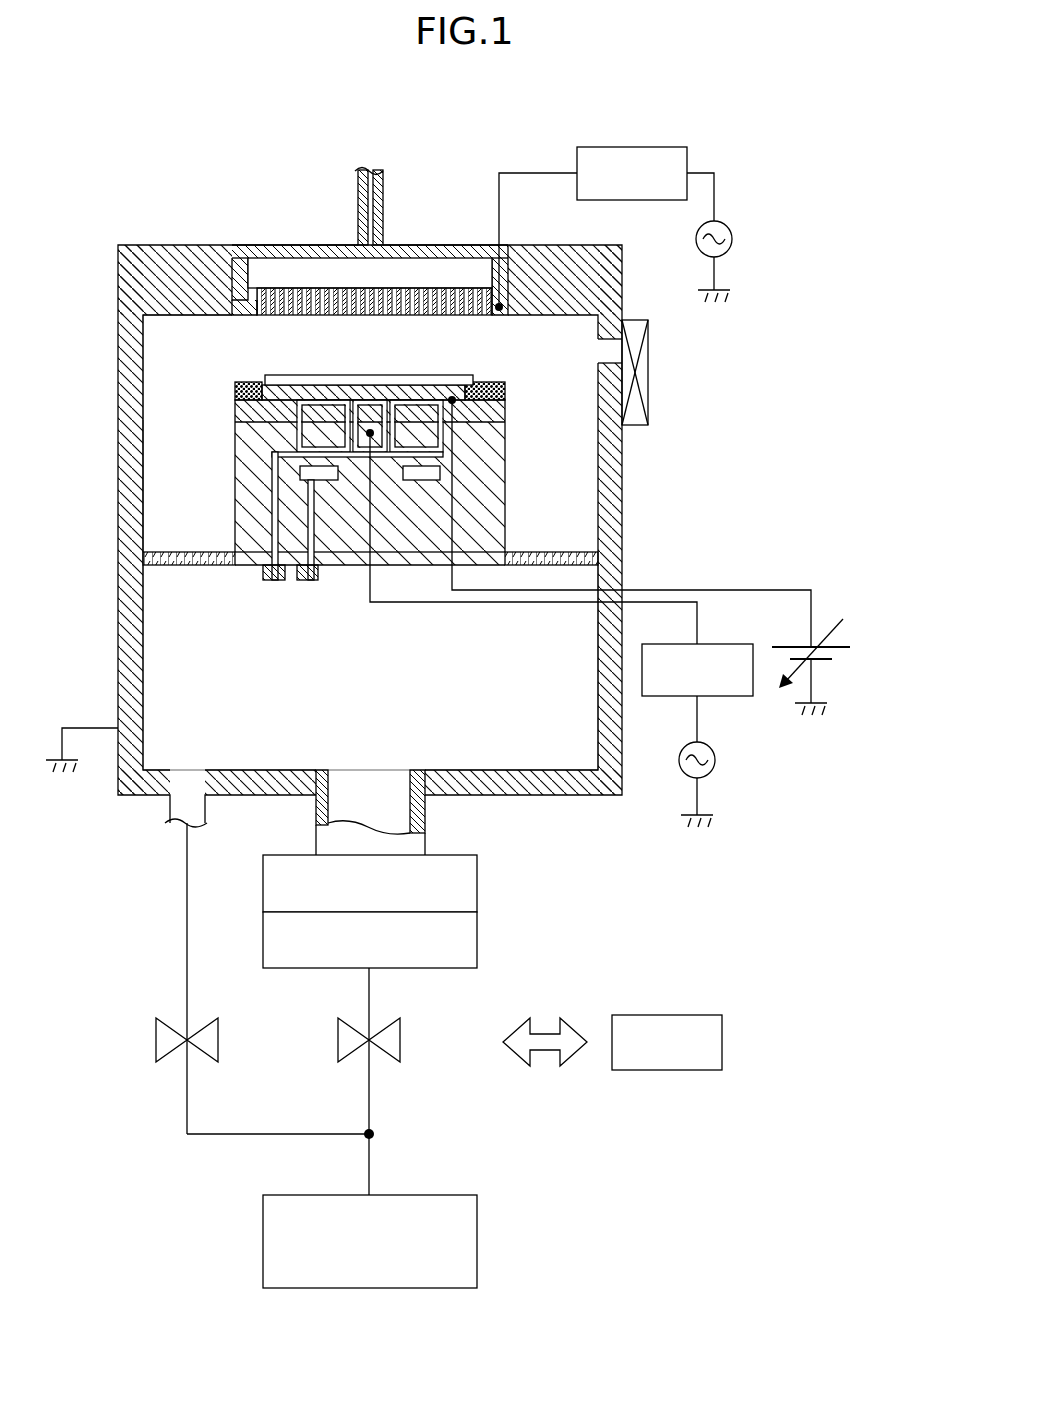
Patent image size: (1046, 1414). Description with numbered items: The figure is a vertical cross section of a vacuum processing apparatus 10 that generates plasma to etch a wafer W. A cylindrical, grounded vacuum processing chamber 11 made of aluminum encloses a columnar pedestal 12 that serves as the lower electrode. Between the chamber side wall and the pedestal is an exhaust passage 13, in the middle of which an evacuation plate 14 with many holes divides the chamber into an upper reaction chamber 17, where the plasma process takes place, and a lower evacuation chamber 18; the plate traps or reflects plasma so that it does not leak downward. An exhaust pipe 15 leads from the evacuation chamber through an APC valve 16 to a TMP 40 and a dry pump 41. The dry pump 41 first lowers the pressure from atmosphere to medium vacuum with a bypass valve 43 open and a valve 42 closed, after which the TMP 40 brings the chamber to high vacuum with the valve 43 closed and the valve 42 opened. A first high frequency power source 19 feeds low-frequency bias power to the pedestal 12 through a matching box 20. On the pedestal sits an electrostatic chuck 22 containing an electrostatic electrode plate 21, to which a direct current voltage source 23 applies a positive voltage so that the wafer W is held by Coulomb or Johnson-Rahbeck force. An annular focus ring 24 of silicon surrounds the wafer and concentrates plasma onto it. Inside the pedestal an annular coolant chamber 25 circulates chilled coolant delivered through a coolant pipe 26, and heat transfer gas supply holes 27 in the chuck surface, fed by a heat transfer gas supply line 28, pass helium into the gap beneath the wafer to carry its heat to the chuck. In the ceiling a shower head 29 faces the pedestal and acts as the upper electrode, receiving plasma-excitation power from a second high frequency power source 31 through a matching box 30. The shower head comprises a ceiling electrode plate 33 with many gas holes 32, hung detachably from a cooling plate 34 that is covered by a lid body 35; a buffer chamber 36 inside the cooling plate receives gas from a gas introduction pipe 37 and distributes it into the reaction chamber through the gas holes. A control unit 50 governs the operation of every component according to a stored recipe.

The vacuum processing apparatus 10 is at (341, 104).
The vacuum processing chamber 11 is at (118, 283).
The pedestal 12 is at (381, 490).
The exhaust passage 13 is at (152, 499).
The evacuation plate 14 is at (155, 552).
The exhaust pipe 15 is at (427, 815).
The APC valve 16 is at (477, 883).
The reaction chamber 17 is at (152, 370).
The evacuation chamber 18 is at (152, 630).
The first high frequency power source 19 is at (715, 760).
The matching box 20 is at (680, 697).
The electrostatic electrode plate 21 is at (430, 385).
The electrostatic chuck 22 is at (335, 392).
The direct current voltage source 23 is at (840, 645).
The focus ring 24 is at (490, 383).
The coolant chamber 25 is at (418, 480).
The coolant pipe 26 is at (318, 581).
The heat transfer gas supply holes 27 is at (382, 406).
The heat transfer gas supply line 28 is at (260, 587).
The shower head 29 is at (367, 254).
The matching box 30 is at (631, 147).
The second high frequency power source 31 is at (732, 240).
The gas holes 32 is at (290, 300).
The ceiling electrode plate 33 is at (245, 316).
The cooling plate 34 is at (241, 265).
The lid body 35 is at (423, 260).
The buffer chamber 36 is at (467, 270).
The gas introduction pipe 37 is at (384, 185).
The TMP 40 is at (477, 940).
The dry pump 41 is at (477, 1245).
The valve 42 is at (400, 1040).
The valve 43 is at (218, 1040).
The control unit 50 is at (666, 1015).
The wafer W is at (267, 375).